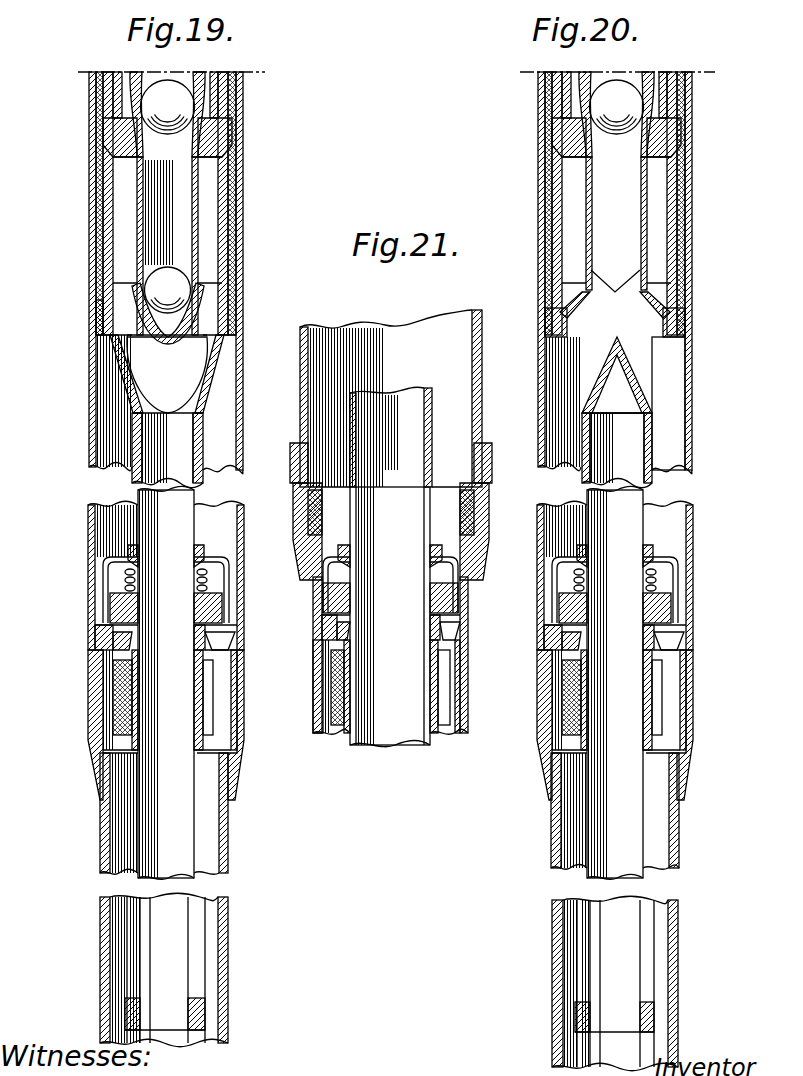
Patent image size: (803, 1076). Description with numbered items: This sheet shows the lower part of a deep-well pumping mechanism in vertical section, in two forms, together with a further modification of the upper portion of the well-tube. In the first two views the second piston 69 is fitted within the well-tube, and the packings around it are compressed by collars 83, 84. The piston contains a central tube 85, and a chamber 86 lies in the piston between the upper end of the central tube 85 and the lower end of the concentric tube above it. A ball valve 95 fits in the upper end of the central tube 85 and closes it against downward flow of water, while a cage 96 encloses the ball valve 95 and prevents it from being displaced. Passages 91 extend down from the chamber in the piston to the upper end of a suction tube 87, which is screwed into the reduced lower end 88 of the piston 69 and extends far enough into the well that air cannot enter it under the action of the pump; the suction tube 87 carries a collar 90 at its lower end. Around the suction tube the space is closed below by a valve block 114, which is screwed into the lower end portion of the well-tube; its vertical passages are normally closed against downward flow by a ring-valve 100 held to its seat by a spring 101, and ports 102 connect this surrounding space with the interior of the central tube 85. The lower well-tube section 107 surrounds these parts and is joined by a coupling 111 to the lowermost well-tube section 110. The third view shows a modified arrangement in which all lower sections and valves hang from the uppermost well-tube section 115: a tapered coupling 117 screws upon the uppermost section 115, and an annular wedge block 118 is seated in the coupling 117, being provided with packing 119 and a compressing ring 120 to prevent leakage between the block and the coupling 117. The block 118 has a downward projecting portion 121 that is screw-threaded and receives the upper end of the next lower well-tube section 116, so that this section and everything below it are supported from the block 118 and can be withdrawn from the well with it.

In FIG. 19, the second piston 69 is at (226, 138).
In FIG. 20, the second piston 69 is at (641, 138).
In FIG. 19, the collar 83 is at (96, 314).
In FIG. 19, the collar 84 is at (97, 329).
In FIG. 19, the central tube 85 is at (200, 222).
In FIG. 20, the central tube 85 is at (658, 224).
In FIG. 19, the chamber 86 is at (221, 88).
In FIG. 20, the chamber 86 is at (633, 80).
In FIG. 19, the suction tube 87 is at (195, 483).
In FIG. 21, the suction tube 87 is at (423, 735).
In FIG. 20, the suction tube 87 is at (639, 646).
In FIG. 19, the reduced lower end of piston 88 is at (205, 433).
In FIG. 20, the reduced lower end of piston 88 is at (638, 412).
In FIG. 19, the collar 90 is at (205, 1010).
In FIG. 20, the collar 90 is at (648, 1017).
In FIG. 19, the passages 91 is at (207, 172).
In FIG. 20, the passages 91 is at (608, 203).
In FIG. 19, the ball valve 95 is at (176, 89).
In FIG. 20, the ball valve 95 is at (619, 92).
In FIG. 19, the cage 96 is at (210, 98).
In FIG. 20, the cage 96 is at (655, 114).
In FIG. 19, the ring-valve 100 is at (213, 607).
In FIG. 20, the ring-valve 100 is at (659, 610).
In FIG. 19, the spring 101 is at (212, 578).
In FIG. 20, the spring 101 is at (646, 564).
In FIG. 19, the ports 102 is at (188, 353).
In FIG. 20, the ports 102 is at (649, 352).
In FIG. 19, the lower well-tube section 107 is at (240, 404).
In FIG. 20, the lower well-tube section 107 is at (623, 361).
In FIG. 19, the lowermost well-tube section 110 is at (227, 898).
In FIG. 20, the lowermost well-tube section 110 is at (589, 912).
In FIG. 19, the coupling 111 is at (287, 775).
In FIG. 20, the coupling 111 is at (645, 725).
In FIG. 19, the valve block 114 is at (297, 654).
In FIG. 20, the valve block 114 is at (655, 640).
In FIG. 21, the uppermost well-tube section 115 is at (477, 391).
In FIG. 21, the next lower well-tube section 116 is at (468, 672).
In FIG. 21, the tapered coupling 117 is at (475, 552).
In FIG. 21, the annular wedge block 118 is at (455, 553).
In FIG. 21, the packing 119 is at (470, 521).
In FIG. 21, the compressing ring 120 is at (490, 496).
In FIG. 21, the downward projecting portion 121 is at (467, 610).